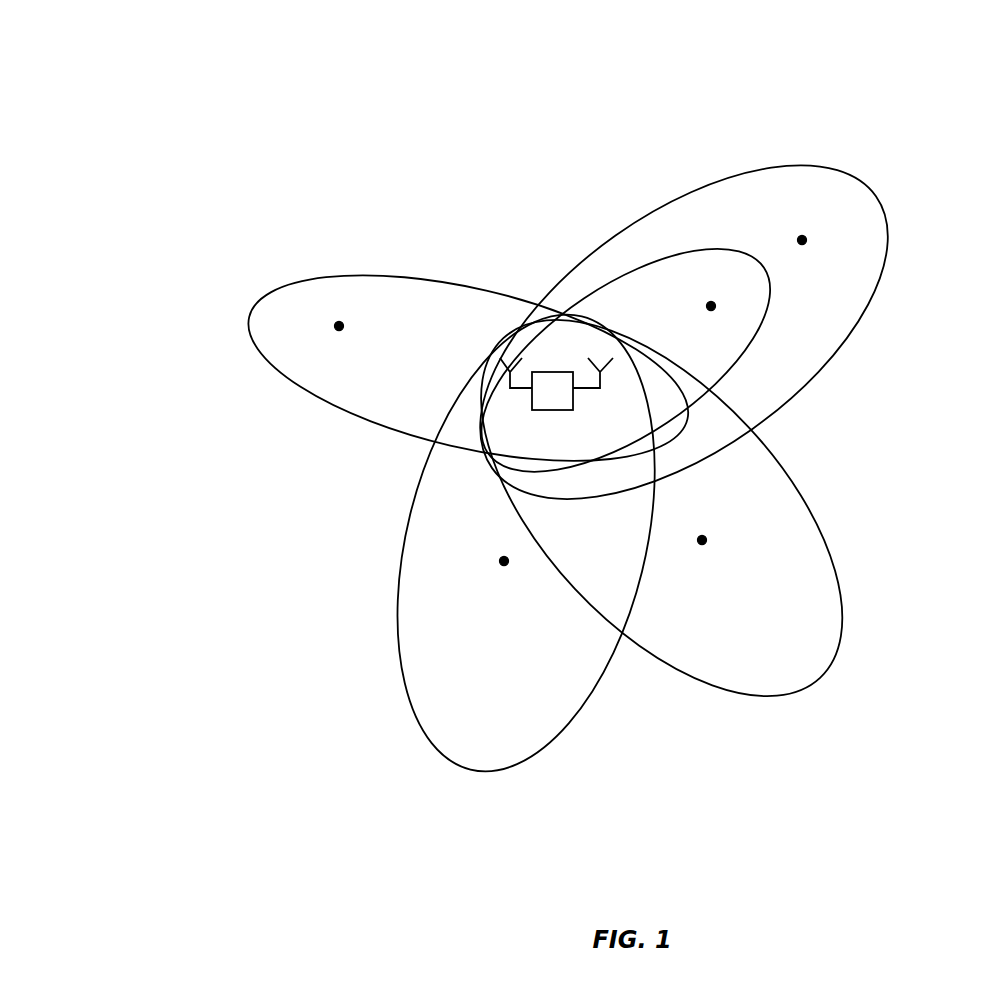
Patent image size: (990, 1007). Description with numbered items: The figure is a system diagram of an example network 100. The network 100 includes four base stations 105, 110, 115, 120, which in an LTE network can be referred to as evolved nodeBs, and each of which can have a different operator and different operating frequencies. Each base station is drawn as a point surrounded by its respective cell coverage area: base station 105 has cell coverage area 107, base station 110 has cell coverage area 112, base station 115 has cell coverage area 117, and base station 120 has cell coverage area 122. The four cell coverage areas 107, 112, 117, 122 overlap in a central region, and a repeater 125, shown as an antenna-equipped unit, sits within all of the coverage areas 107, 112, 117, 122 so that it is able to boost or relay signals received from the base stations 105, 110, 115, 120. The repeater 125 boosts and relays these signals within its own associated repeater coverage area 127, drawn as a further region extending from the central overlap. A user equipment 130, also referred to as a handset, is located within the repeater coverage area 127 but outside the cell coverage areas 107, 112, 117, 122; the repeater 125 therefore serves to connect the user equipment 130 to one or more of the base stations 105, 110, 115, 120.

The network 100 is at (124, 104).
The base station 105 is at (820, 240).
The cell coverage area 107 is at (873, 190).
The base station 110 is at (724, 312).
The cell coverage area 112 is at (748, 249).
The base station 115 is at (715, 537).
The cell coverage area 117 is at (793, 483).
The base station 120 is at (490, 561).
The cell coverage area 122 is at (575, 713).
The repeater 125 is at (556, 384).
The repeater coverage area 127 is at (335, 409).
The user equipment 130 is at (320, 321).